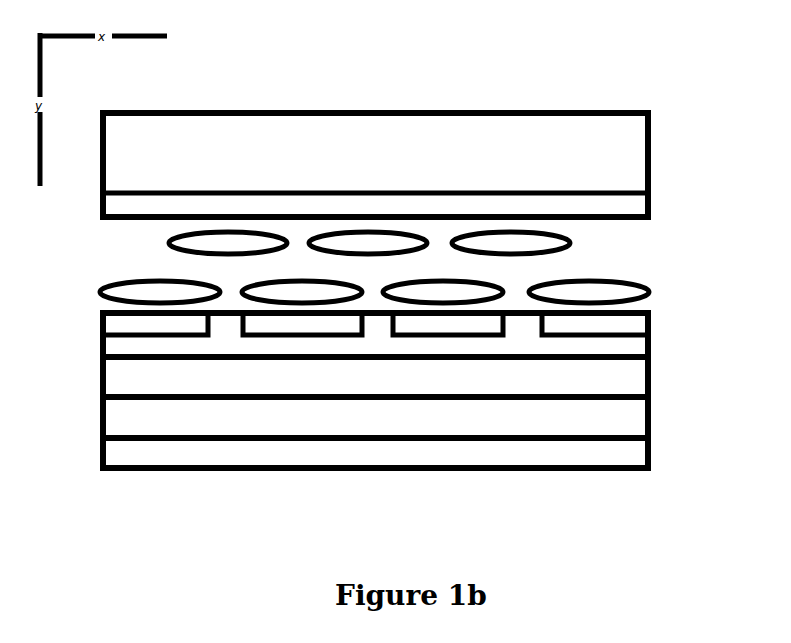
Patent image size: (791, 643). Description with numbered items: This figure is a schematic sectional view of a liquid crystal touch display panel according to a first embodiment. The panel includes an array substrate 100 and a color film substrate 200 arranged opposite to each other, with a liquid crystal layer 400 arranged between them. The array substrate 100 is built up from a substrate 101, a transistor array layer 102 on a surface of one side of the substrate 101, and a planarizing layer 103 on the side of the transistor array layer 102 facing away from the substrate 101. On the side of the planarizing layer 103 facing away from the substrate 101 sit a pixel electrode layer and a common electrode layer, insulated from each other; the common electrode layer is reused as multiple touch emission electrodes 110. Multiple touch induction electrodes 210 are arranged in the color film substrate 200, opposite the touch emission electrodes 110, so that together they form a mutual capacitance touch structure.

The array substrate 100 is at (103, 405).
The substrate 101 is at (632, 467).
The transistor array layer 102 is at (628, 427).
The planarizing layer 103 is at (625, 390).
The touch emission electrodes 110 is at (640, 328).
The color film substrate 200 is at (636, 166).
The touch induction electrodes 210 is at (627, 211).
The liquid crystal layer 400 is at (600, 272).